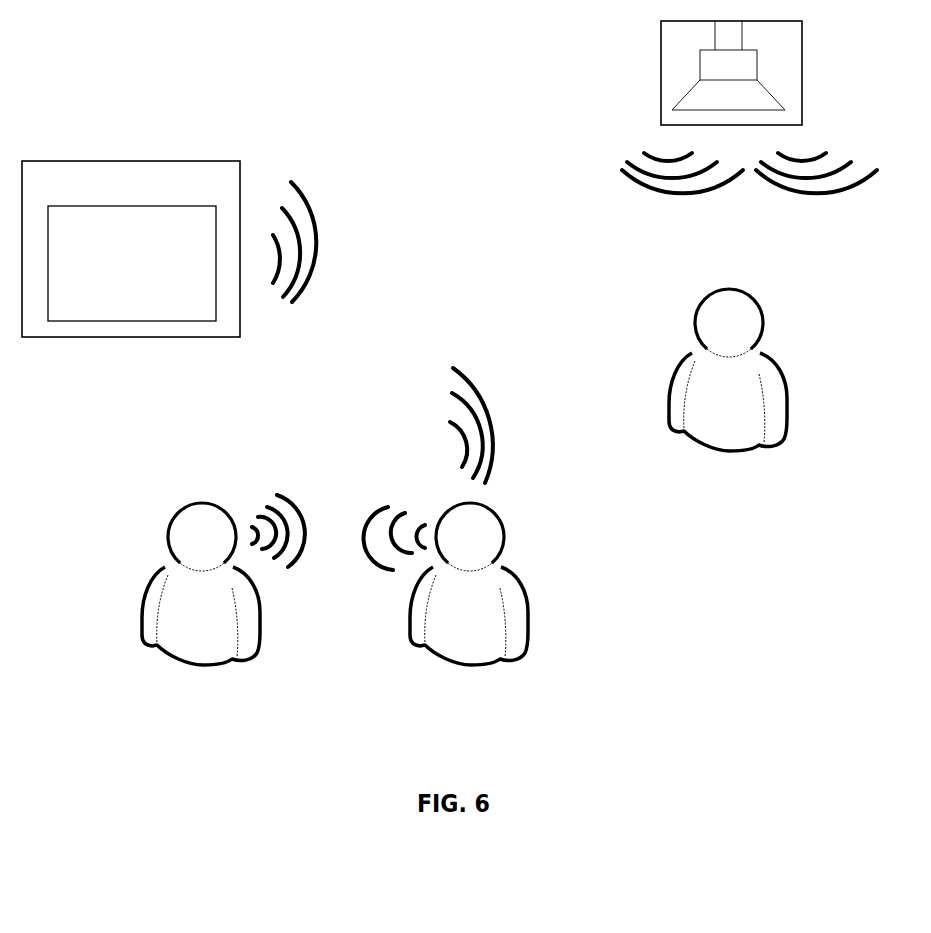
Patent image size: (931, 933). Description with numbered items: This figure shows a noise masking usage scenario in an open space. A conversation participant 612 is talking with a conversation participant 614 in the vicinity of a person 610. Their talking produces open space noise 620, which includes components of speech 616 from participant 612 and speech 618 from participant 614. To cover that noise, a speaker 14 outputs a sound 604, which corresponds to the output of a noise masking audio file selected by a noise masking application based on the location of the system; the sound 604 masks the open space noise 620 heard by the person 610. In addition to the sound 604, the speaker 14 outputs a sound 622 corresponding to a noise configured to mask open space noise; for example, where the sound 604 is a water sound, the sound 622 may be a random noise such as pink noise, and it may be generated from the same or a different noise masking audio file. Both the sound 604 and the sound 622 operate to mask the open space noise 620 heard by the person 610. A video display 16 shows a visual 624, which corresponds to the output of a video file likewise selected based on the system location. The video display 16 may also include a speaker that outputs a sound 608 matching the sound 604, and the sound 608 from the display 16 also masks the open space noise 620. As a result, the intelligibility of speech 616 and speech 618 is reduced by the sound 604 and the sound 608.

The speaker 14 is at (642, 77).
The video display 16 is at (131, 249).
The sound 604 is at (682, 190).
The sound 622 is at (816, 190).
The sound 608 is at (308, 235).
The person 610 is at (670, 407).
The conversation participant 612 is at (142, 620).
The conversation participant 614 is at (410, 619).
The speech 616 is at (278, 517).
The speech 618 is at (394, 518).
The open space noise 620 is at (475, 412).
The visual 624 is at (132, 263).